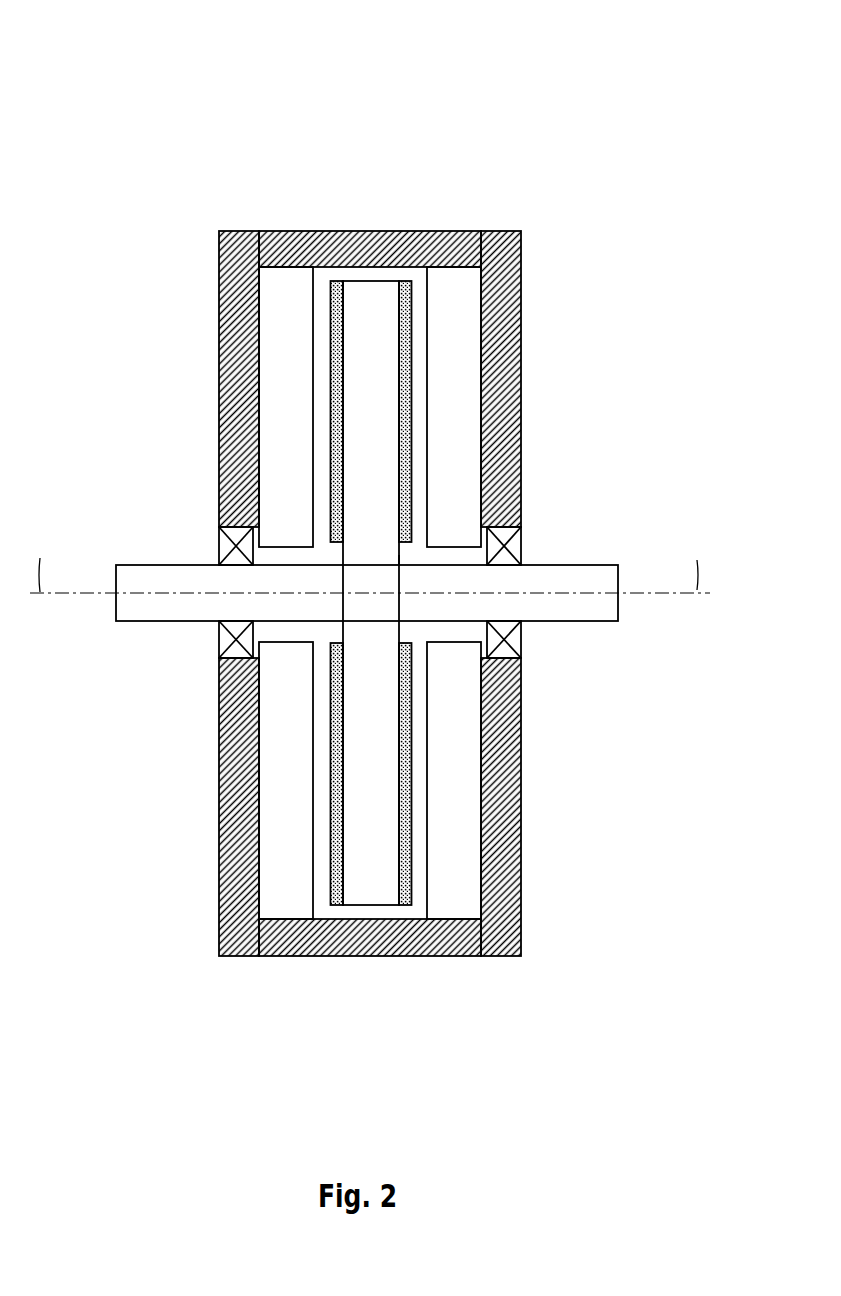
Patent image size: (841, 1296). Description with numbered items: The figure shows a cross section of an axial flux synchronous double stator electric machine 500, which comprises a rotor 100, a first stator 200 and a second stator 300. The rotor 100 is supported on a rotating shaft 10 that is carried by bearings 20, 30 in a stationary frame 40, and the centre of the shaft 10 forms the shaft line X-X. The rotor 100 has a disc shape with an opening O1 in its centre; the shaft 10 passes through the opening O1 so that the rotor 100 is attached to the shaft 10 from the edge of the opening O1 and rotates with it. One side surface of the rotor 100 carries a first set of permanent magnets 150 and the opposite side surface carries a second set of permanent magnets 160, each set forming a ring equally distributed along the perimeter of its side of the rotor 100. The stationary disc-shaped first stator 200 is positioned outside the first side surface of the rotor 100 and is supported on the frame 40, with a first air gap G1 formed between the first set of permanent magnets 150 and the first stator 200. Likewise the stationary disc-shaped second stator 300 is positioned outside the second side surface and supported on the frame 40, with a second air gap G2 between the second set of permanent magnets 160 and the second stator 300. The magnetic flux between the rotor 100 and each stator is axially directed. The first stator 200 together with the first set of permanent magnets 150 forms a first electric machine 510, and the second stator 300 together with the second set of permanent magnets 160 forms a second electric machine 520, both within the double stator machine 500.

The synchronous double stator electric machine 500 is at (223, 80).
The first electric machine 510 is at (329, 258).
The second electric machine 520 is at (420, 254).
The stationary frame 40 is at (495, 242).
The rotating shaft 10 is at (595, 575).
The bearing 20 is at (513, 643).
The bearing 30 is at (220, 643).
The rotor 100 is at (390, 457).
The first stator 200 is at (308, 362).
The second stator 300 is at (477, 362).
The first set of permanent magnets 150 is at (337, 290).
The second set of permanent magnets 160 is at (407, 288).
The opening O1 is at (411, 551).
The first air gap G1 is at (321, 918).
The second air gap G2 is at (420, 918).